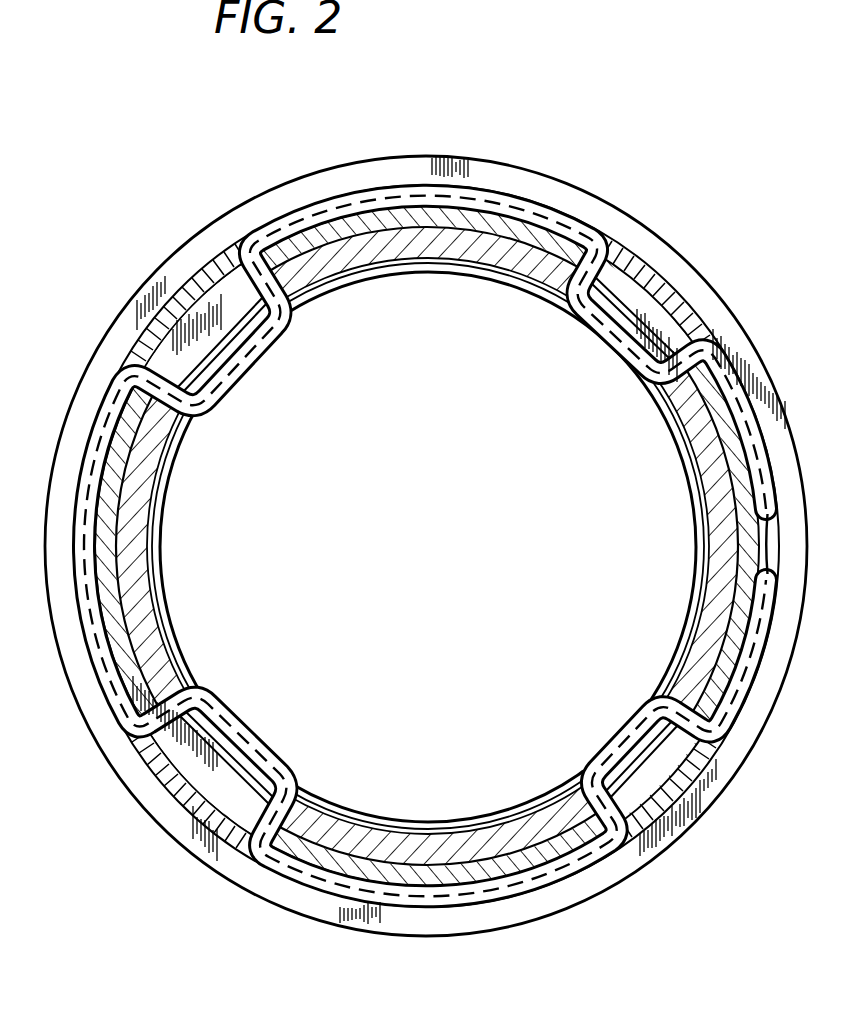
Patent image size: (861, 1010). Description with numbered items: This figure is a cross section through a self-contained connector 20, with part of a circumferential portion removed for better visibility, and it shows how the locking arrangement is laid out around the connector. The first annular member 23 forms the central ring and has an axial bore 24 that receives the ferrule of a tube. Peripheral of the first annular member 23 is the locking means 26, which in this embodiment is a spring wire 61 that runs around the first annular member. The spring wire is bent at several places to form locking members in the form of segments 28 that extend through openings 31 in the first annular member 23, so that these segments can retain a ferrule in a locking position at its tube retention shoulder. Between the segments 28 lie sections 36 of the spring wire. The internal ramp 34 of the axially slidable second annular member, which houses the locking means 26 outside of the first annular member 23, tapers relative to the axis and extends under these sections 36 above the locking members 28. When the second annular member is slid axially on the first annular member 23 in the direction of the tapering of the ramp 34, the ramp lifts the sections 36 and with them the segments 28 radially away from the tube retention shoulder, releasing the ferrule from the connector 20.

The connector 20 is at (203, 870).
The first annular member 23 is at (130, 527).
The axial bore 24 is at (155, 582).
The locking means 26 is at (236, 241).
The locking members 28 is at (242, 364).
The openings 31 is at (622, 322).
The internal ramp 34 is at (140, 753).
The sections of the locking means 36 is at (560, 218).
The spring wire 61 is at (740, 391).